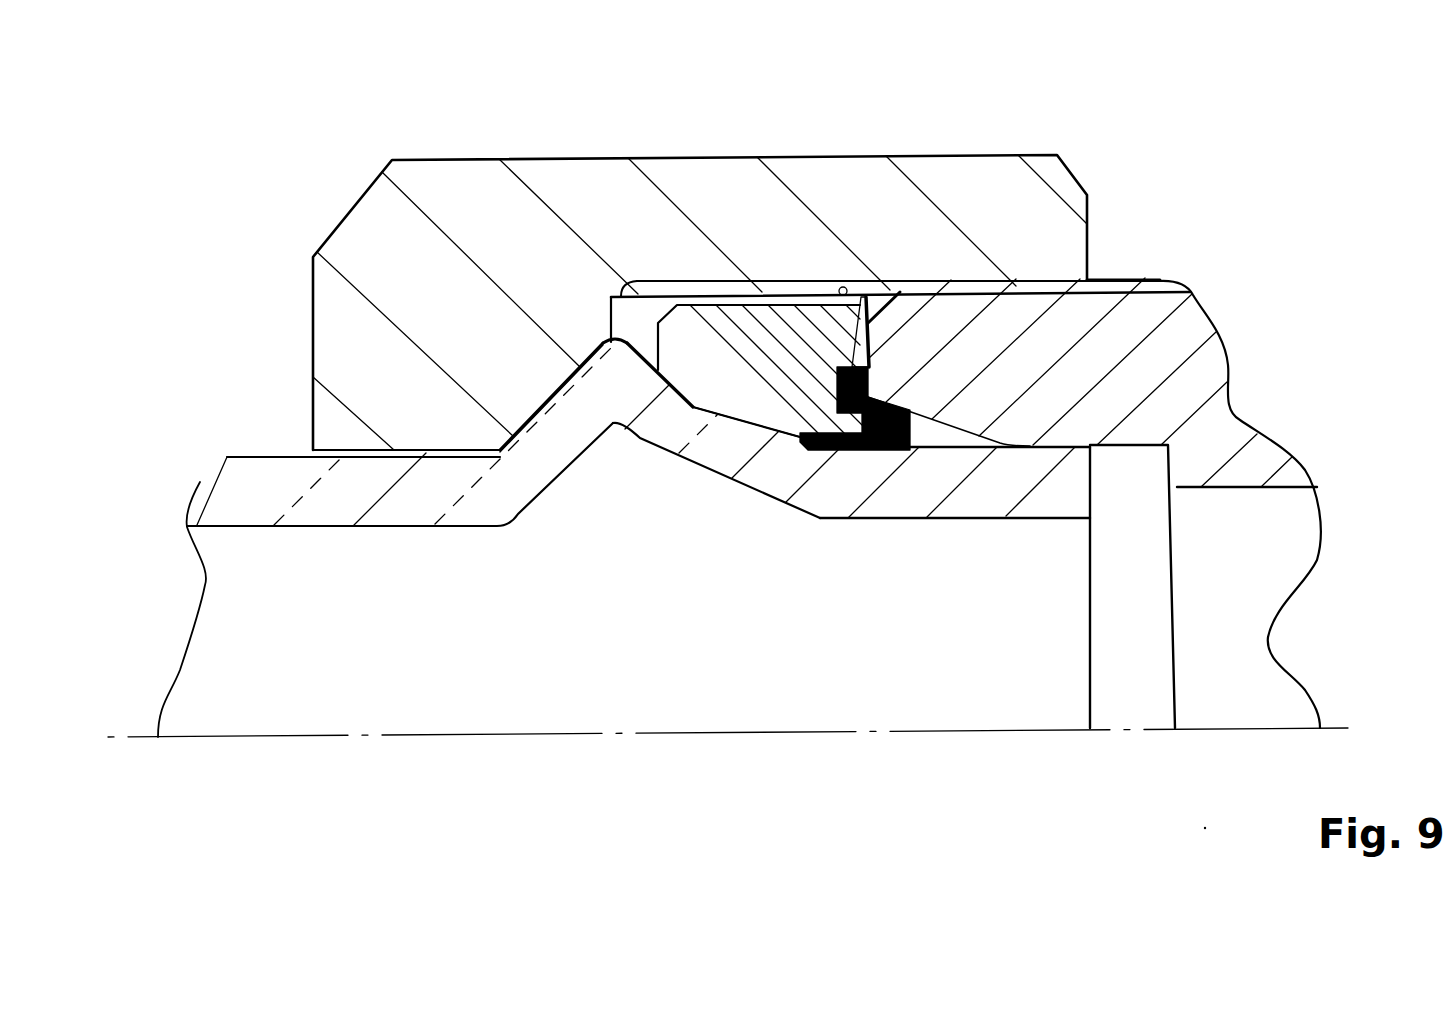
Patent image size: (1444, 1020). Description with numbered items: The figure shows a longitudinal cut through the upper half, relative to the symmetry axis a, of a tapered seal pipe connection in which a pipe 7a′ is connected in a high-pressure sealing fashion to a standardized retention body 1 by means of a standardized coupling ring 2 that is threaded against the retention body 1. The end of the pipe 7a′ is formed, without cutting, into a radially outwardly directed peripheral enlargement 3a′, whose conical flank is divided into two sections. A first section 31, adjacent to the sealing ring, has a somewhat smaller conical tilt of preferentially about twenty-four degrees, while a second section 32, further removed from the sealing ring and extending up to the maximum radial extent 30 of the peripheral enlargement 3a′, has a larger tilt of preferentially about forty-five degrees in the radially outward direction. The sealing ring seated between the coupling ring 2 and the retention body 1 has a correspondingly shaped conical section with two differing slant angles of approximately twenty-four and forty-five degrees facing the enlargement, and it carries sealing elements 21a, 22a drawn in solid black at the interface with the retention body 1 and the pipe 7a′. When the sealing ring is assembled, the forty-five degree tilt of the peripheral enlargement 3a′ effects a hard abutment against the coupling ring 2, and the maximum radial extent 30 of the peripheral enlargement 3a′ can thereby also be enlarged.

The retention body 1 is at (1153, 317).
The coupling ring 2 is at (400, 207).
The peripheral enlargement 3a′ is at (577, 393).
The maximum radial extent 30 is at (606, 338).
The sealing lip 21a is at (863, 365).
The seal 22a is at (858, 452).
The tube 7a′ is at (213, 490).
The first section 31 is at (713, 447).
The second section 32 is at (647, 425).
The symmetry axis a is at (125, 737).